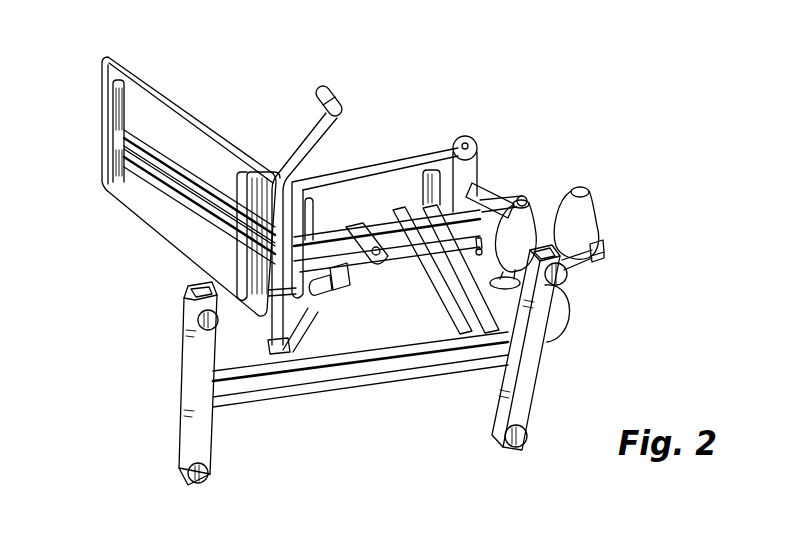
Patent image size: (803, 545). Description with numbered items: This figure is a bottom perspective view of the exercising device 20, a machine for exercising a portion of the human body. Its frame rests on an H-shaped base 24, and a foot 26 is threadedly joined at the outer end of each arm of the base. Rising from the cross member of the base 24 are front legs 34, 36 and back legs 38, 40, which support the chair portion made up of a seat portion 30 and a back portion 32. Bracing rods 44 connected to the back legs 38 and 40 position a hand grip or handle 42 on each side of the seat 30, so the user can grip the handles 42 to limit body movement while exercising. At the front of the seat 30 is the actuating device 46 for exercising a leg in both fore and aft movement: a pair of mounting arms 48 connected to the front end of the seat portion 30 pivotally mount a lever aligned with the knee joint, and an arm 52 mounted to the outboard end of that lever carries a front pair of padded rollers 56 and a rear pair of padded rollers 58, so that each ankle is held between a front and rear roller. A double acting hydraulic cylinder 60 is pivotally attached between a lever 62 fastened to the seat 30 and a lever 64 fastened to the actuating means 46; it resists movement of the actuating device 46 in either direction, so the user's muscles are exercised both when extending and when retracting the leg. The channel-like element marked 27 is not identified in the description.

The device for exercising a portion of the human body 20 is at (156, 82).
The H-shaped base 24 is at (183, 383).
The foot 26 is at (197, 322).
The bracket channel 27 is at (106, 160).
The seat portion 30 is at (370, 165).
The back portion 32 is at (215, 132).
The front leg 34 is at (446, 325).
The front leg 36 is at (468, 300).
The back leg 38 is at (268, 345).
The back leg 40 is at (285, 352).
The handle 42 is at (333, 96).
The bracing rod 44 is at (312, 150).
The actuating device 46 is at (606, 242).
The mounting arm 48 is at (486, 199).
The arm 52 is at (598, 256).
The front padded roller 56 is at (591, 216).
The rear padded roller 58 is at (551, 200).
The double acting hydraulic cylinder 60 is at (370, 290).
The lever 62 is at (382, 232).
The lever 64 is at (521, 205).